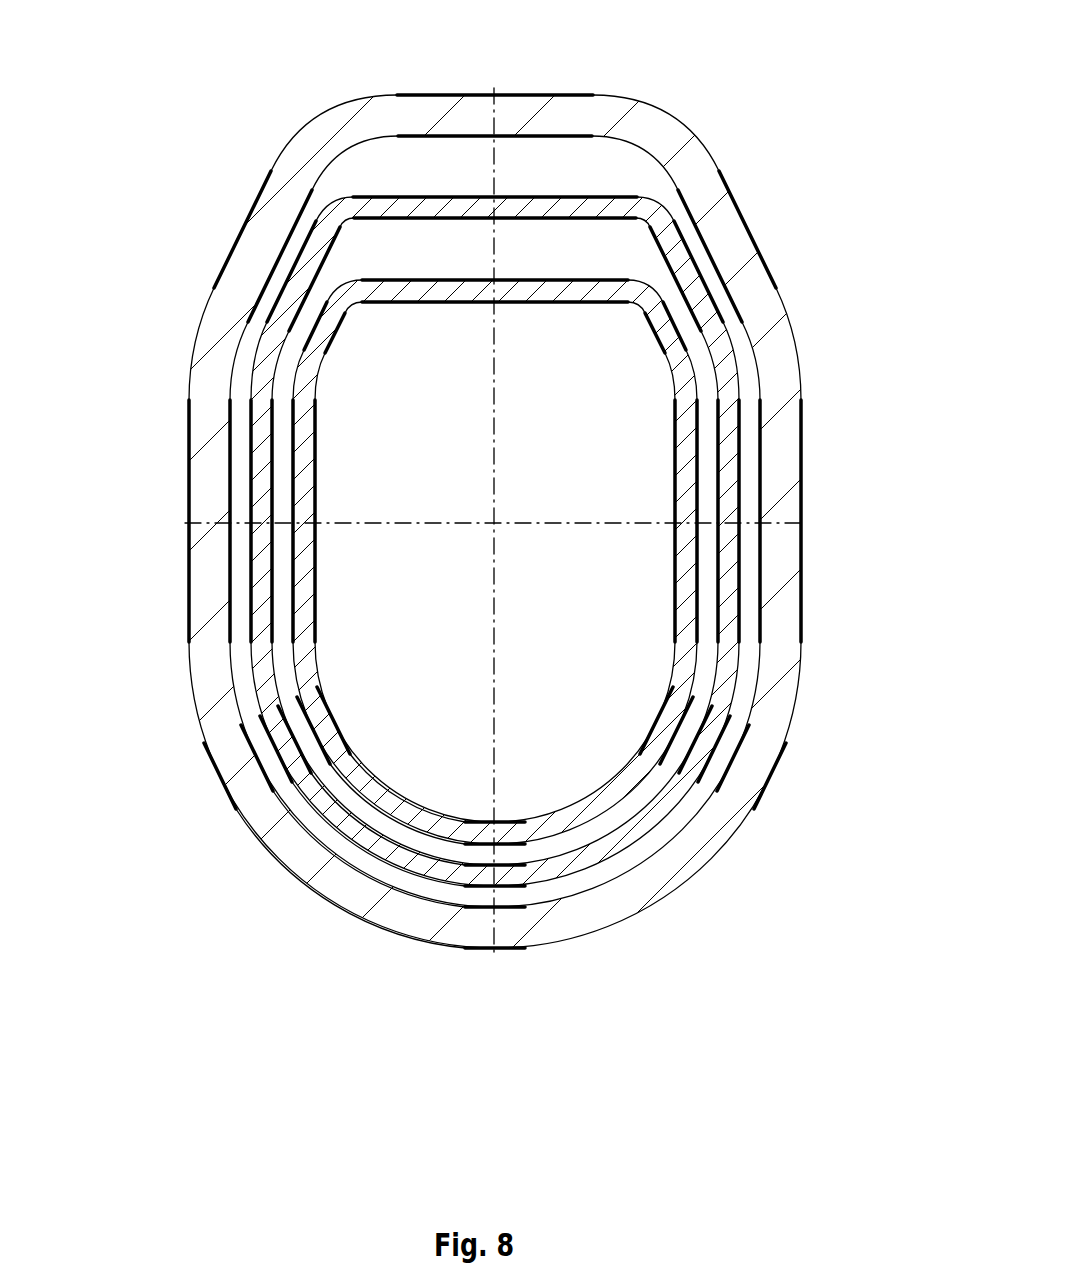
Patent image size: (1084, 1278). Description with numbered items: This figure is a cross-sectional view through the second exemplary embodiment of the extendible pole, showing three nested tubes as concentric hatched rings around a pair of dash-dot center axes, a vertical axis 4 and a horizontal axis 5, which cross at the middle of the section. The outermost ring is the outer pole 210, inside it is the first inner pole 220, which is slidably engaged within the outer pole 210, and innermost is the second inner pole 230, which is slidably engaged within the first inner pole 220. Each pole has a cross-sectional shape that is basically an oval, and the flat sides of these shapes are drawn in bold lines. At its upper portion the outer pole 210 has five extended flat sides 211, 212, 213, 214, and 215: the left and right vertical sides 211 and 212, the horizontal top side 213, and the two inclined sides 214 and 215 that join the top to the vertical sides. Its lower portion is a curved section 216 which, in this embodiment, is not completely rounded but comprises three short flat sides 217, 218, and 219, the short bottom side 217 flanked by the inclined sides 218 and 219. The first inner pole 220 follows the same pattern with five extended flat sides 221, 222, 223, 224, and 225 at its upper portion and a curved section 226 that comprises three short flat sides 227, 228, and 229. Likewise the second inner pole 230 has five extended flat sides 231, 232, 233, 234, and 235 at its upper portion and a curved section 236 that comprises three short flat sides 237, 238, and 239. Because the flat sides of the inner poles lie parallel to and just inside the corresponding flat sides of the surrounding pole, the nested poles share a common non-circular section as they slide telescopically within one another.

The vertical center axis 4 is at (494, 430).
The horizontal center axis 5 is at (567, 523).
The outer pole 210 is at (801, 672).
The extended flat side 211 is at (208, 487).
The extended flat side 212 is at (783, 480).
The extended flat side 213 is at (470, 113).
The extended flat side 214 is at (260, 242).
The extended flat side 215 is at (722, 240).
The curved section 216 is at (413, 920).
The short flat side 217 is at (478, 928).
The short flat side 218 is at (240, 762).
The short flat side 219 is at (747, 762).
The first inner pole 220 is at (644, 846).
The extended flat side 221 is at (262, 538).
The extended flat side 222 is at (731, 548).
The extended flat side 223 is at (506, 208).
The extended flat side 224 is at (300, 278).
The extended flat side 225 is at (693, 281).
The curved section 226 is at (385, 860).
The short flat side 227 is at (500, 877).
The short flat side 228 is at (298, 750).
The short flat side 229 is at (697, 745).
The second inner pole 230 is at (589, 831).
The extended flat side 231 is at (303, 580).
The extended flat side 232 is at (686, 575).
The extended flat side 233 is at (562, 292).
The extended flat side 234 is at (325, 325).
The extended flat side 235 is at (663, 327).
The curved section 236 is at (358, 790).
The short flat side 237 is at (507, 830).
The short flat side 238 is at (342, 745).
The short flat side 239 is at (648, 745).